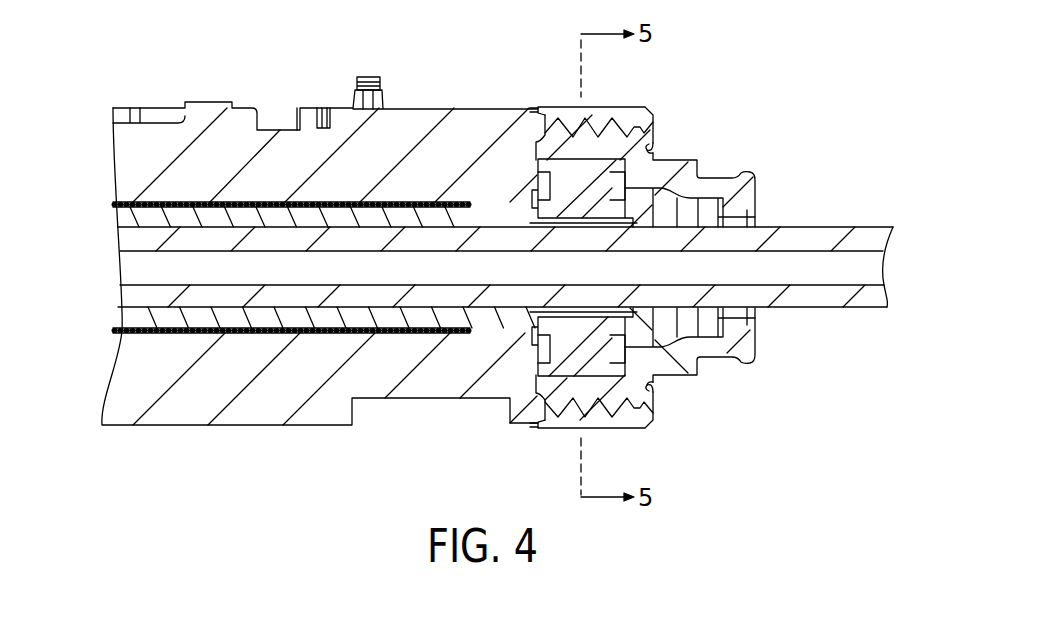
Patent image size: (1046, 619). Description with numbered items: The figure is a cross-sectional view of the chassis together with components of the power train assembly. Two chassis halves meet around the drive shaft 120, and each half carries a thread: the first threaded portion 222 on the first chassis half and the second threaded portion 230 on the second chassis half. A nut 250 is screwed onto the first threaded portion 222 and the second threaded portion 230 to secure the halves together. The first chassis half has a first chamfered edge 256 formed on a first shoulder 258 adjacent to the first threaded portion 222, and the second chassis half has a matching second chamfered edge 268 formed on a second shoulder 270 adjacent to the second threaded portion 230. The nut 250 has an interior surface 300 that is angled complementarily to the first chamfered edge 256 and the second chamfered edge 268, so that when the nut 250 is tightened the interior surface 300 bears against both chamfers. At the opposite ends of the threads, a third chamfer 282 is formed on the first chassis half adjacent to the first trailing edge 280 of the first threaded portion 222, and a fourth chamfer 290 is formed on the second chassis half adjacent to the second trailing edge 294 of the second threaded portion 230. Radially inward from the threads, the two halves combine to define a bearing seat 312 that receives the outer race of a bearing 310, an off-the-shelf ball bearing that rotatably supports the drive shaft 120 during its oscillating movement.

The drive shaft 120 is at (867, 236).
The first threaded portion 222 is at (588, 135).
The second threaded portion 230 is at (578, 410).
The nut 250 is at (605, 108).
The first chamfered edge 256 is at (653, 152).
The first shoulder 258 is at (651, 149).
The second chamfered edge 268 is at (651, 386).
The second shoulder 270 is at (653, 382).
The first trailing edge 280 is at (547, 138).
The third chamfer 282 is at (540, 112).
The fourth chamfer 290 is at (540, 412).
The second trailing edge 294 is at (552, 423).
The interior surface 300 is at (652, 148).
The bearing 310 is at (594, 197).
The bearing seat 312 is at (563, 200).